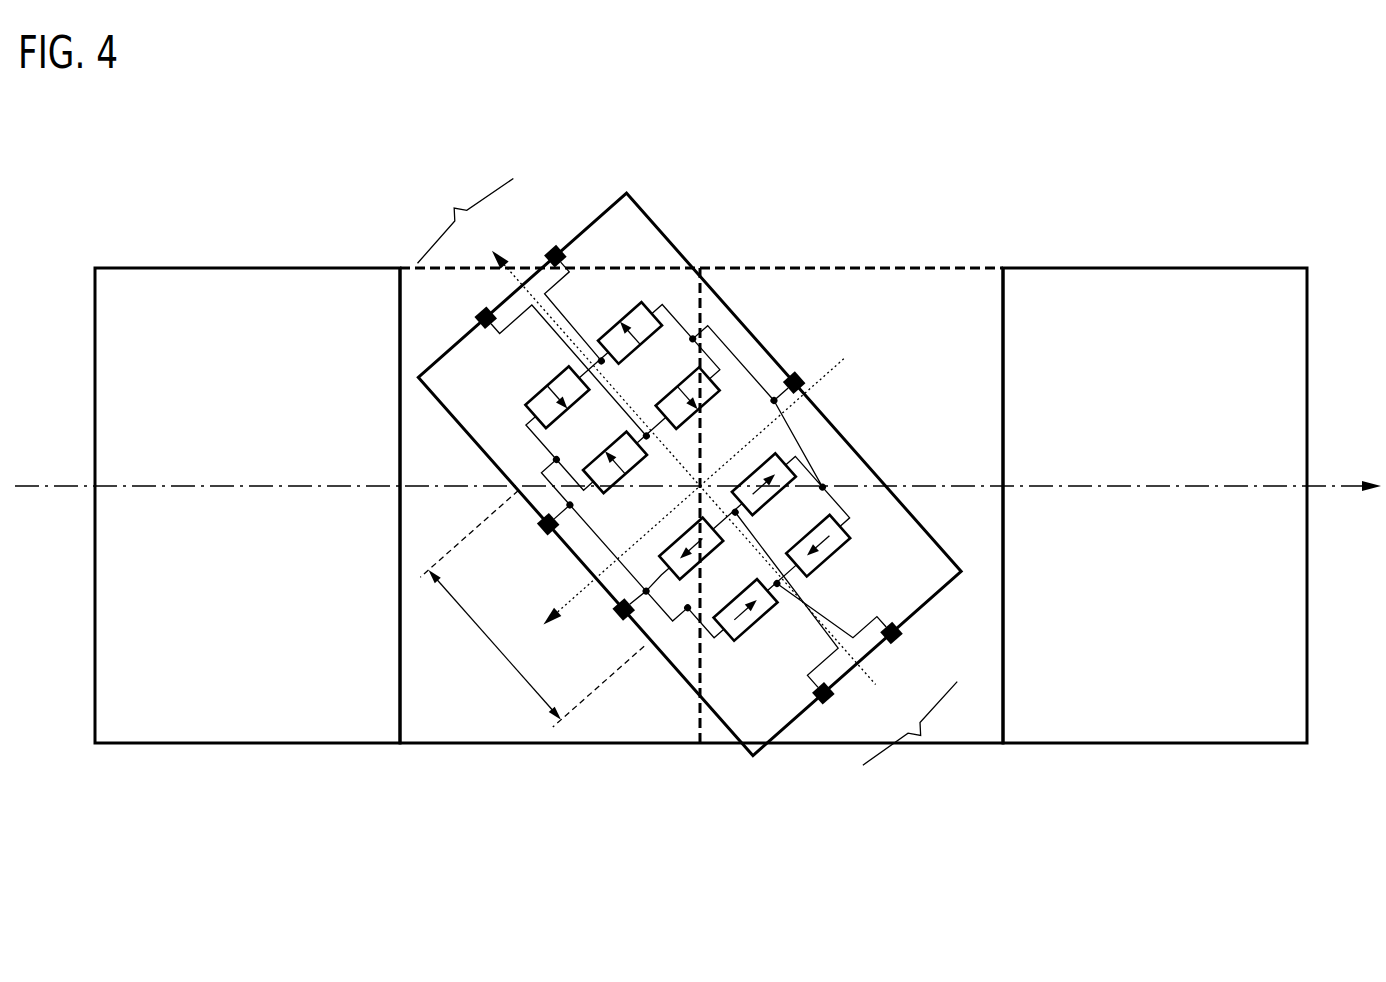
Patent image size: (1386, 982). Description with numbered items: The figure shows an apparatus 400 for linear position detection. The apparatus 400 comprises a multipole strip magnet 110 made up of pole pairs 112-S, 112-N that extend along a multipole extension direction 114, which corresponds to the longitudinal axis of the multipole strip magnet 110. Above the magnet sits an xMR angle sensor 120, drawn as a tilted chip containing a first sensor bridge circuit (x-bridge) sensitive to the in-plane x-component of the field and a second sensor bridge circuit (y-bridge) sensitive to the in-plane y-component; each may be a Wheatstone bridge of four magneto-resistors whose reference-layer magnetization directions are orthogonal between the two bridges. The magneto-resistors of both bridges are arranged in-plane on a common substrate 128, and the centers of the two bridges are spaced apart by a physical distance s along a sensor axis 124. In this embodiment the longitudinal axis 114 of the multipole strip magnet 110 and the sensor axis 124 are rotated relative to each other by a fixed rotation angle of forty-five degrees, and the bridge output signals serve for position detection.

The apparatus for position detection 400 is at (940, 150).
The multipole strip magnet 110 is at (1102, 244).
The north pole of pole pair 112-N is at (248, 745).
The south pole of pole pair 112-S is at (527, 745).
The multipole extension direction 114 is at (1323, 484).
The xMR sensor 120 is at (653, 222).
The sensor axis 124 is at (828, 629).
The common substrate 128 is at (719, 294).